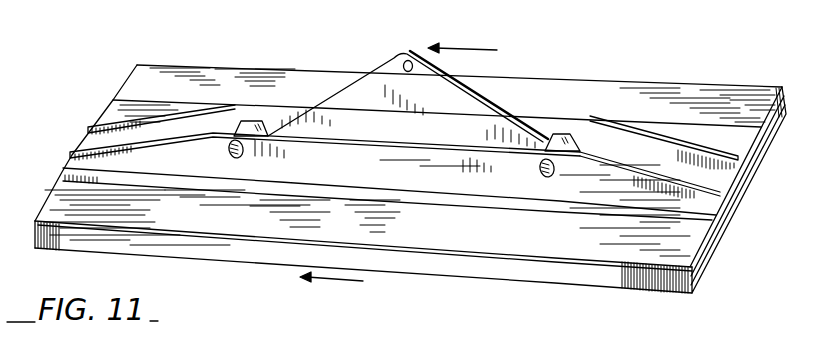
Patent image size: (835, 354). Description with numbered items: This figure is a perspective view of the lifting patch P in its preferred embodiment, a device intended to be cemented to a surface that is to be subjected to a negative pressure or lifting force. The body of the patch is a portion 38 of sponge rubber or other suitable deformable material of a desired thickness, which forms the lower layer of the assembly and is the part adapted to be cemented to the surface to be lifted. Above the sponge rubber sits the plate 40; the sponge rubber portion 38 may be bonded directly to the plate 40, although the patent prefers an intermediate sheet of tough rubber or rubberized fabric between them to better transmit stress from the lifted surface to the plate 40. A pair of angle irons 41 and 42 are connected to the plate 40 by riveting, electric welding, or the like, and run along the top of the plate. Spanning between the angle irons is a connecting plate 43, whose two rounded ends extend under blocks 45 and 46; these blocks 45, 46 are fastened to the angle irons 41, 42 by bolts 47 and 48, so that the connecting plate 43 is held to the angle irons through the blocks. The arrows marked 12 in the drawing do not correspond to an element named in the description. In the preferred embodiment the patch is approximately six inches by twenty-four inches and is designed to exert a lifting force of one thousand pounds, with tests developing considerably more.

The lifting patch P is at (675, 75).
The direction of movement 12 is at (449, 78).
The portion of sponge rubber 38 is at (596, 278).
The plate 40 is at (690, 234).
The angle iron 41 is at (715, 135).
The angle iron 42 is at (710, 197).
The connecting plate 43 is at (396, 34).
The block 45 is at (557, 138).
The block 46 is at (253, 121).
The bolt 47 is at (237, 160).
The bolt 48 is at (550, 178).